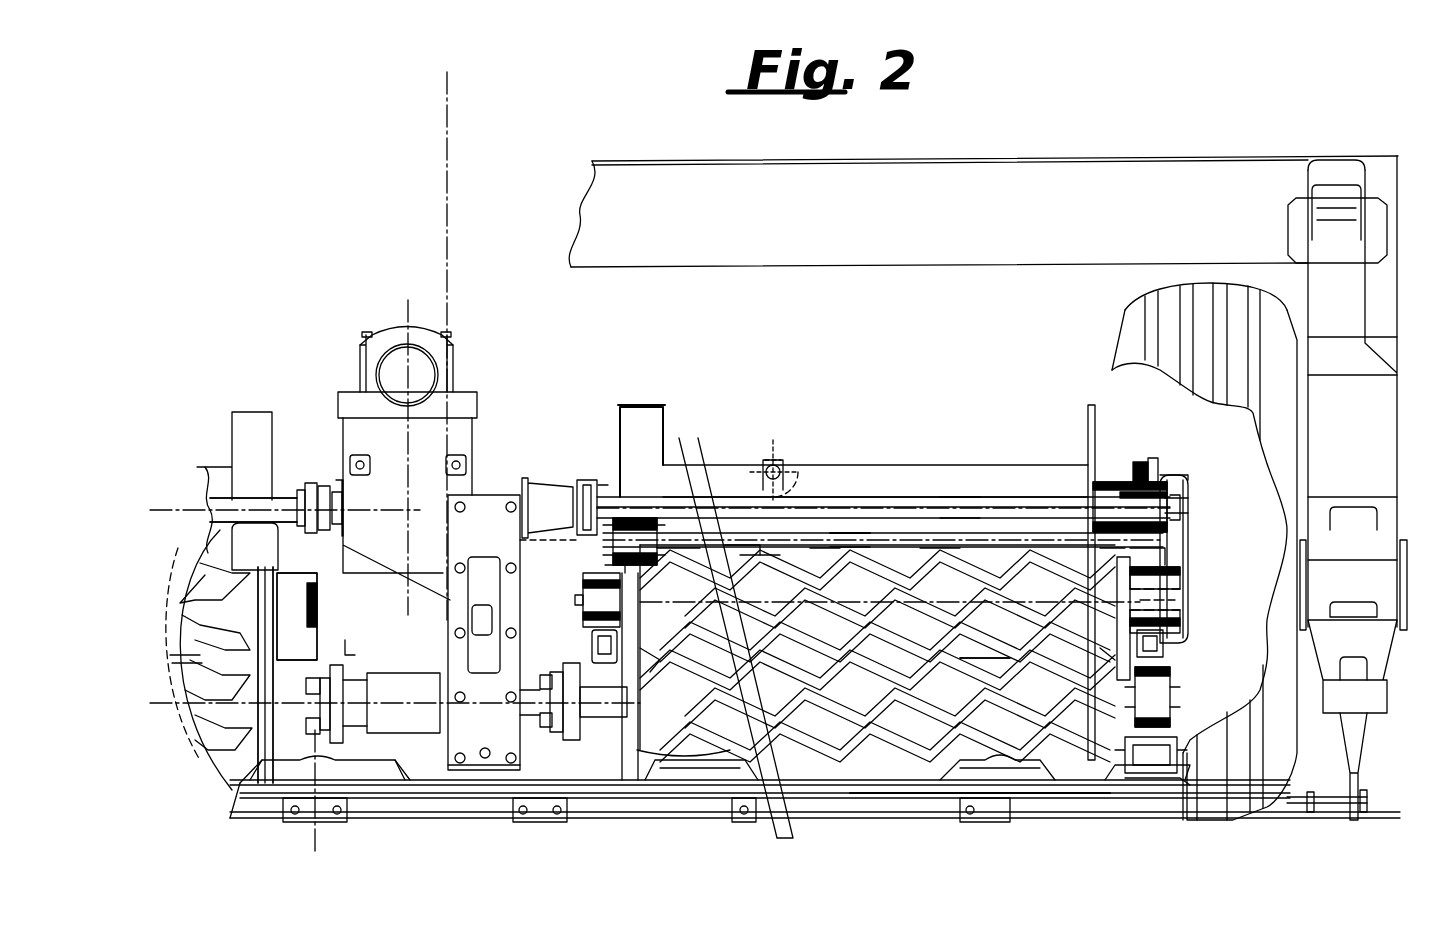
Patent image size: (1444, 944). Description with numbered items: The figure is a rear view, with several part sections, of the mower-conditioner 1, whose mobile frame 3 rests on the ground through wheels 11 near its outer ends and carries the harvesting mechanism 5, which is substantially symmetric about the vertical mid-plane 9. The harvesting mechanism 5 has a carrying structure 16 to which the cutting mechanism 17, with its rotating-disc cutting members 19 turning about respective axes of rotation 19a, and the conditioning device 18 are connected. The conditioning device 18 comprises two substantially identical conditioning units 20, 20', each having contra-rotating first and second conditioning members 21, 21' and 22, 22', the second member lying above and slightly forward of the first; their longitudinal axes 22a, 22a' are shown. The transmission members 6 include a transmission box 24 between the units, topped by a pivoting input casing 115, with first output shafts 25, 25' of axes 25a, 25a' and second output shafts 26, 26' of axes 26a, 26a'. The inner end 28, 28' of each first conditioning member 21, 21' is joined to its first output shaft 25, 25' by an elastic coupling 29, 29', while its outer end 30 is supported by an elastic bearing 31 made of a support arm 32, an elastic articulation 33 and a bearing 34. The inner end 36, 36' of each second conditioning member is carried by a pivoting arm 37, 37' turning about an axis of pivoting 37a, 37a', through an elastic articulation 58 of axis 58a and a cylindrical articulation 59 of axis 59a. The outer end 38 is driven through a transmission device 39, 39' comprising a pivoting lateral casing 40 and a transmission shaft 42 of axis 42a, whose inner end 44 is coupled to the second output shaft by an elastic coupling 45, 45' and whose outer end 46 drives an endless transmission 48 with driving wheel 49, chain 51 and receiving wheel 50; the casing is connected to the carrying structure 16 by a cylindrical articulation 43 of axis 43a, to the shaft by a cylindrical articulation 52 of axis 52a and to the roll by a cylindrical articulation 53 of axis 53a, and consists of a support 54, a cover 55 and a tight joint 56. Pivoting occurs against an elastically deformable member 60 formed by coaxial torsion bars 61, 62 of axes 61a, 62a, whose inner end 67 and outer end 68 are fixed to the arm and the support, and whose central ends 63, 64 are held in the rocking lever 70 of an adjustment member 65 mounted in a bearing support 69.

The mower-conditioner 1 is at (1100, 160).
The mobile frame 3 is at (675, 256).
The harvesting mechanism 5 is at (843, 822).
The transmission members 6 is at (470, 770).
The vertical mid-plane 9 is at (447, 100).
The wheels 11 is at (1268, 795).
The carrying structure 16 is at (1020, 470).
The cutting mechanism 17 is at (878, 822).
The conditioning device 18 is at (688, 765).
The cutting members 19 is at (238, 800).
The axis of rotation 19a is at (317, 842).
The conditioning unit 20 is at (997, 813).
The conditioning unit 20' is at (293, 806).
The first conditioning member 21 is at (877, 706).
The first conditioning member 21' is at (395, 723).
The second conditioning member 22 is at (890, 603).
The second conditioning member 22' is at (209, 660).
The longitudinal axis 22a is at (326, 616).
The longitudinal axis 22a' is at (352, 616).
The transmission box 24 is at (492, 380).
The first output shaft 25 is at (565, 777).
The first output shaft 25' is at (391, 691).
The longitudinal axis 25a is at (207, 675).
The longitudinal axis 25a' is at (207, 675).
The second output shaft 26 is at (548, 484).
The second output shaft 26' is at (318, 472).
The longitudinal axis 26a is at (214, 448).
The longitudinal axis 26a' is at (285, 448).
The inner end 28 is at (577, 780).
The inner end 28' is at (303, 777).
The elastic coupling 29 is at (567, 763).
The elastic coupling 29' is at (363, 715).
The outer end 30 is at (1125, 768).
The elastic bearing 31 is at (1183, 760).
The support arm 32 is at (1165, 785).
The elastic articulation 33 is at (1155, 778).
The bearing 34 is at (1172, 680).
The inner end 36 is at (544, 488).
The inner end 36' is at (177, 662).
The pivoting arm 37 is at (577, 642).
The pivoting arm 37' is at (356, 652).
The axis of pivoting 37a is at (886, 435).
The axis of pivoting 37a' is at (206, 554).
The outer end 38 is at (1192, 648).
The transmission device 39 is at (684, 579).
The transmission device 39' is at (236, 449).
The pivoting lateral casing 40 is at (1200, 468).
The transmission shaft 42 is at (950, 497).
The longitudinal axis 42a is at (995, 443).
The cylindrical articulation 43 is at (1105, 475).
The longitudinal axis 43a is at (960, 500).
The inner end 44 is at (603, 480).
The elastic coupling 45 is at (590, 474).
The elastic coupling 45' is at (308, 489).
The outer end 46 is at (1165, 455).
The endless transmission 48 is at (1188, 540).
The driving wheel 49 is at (1190, 492).
The receiving wheel 50 is at (1188, 618).
The chain 51 is at (1185, 555).
The cylindrical articulation 52 is at (1158, 470).
The longitudinal axis 52a is at (970, 433).
The cylindrical articulation 53 is at (1188, 565).
The longitudinal axis 53a is at (985, 660).
The support 54 is at (1122, 590).
The cover 55 is at (1188, 583).
The tight joint 56 is at (1165, 470).
The elastic articulation 58 is at (645, 520).
The longitudinal axis 58a is at (850, 500).
The cylindrical articulation 59 is at (585, 590).
The longitudinal axis 59a is at (989, 679).
The elastically deformable member 60 is at (700, 560).
The torsion bar 61 is at (740, 560).
The longitudinal axis 61a is at (890, 416).
The torsion bar 62 is at (935, 548).
The longitudinal axis 62a is at (863, 428).
The central end 63 is at (742, 565).
The central end 64 is at (820, 565).
The adjustment member 65 is at (785, 450).
The inner end 67 is at (672, 568).
The outer end 68 is at (1120, 550).
The bearing support 69 is at (765, 470).
The rocking lever 70 is at (780, 488).
The input casing 115 is at (372, 318).